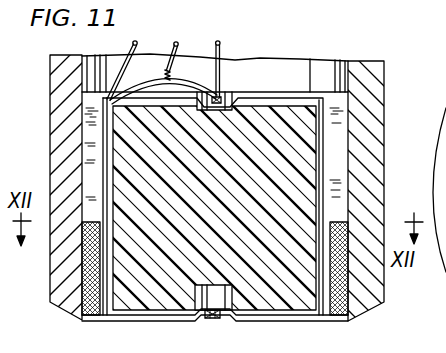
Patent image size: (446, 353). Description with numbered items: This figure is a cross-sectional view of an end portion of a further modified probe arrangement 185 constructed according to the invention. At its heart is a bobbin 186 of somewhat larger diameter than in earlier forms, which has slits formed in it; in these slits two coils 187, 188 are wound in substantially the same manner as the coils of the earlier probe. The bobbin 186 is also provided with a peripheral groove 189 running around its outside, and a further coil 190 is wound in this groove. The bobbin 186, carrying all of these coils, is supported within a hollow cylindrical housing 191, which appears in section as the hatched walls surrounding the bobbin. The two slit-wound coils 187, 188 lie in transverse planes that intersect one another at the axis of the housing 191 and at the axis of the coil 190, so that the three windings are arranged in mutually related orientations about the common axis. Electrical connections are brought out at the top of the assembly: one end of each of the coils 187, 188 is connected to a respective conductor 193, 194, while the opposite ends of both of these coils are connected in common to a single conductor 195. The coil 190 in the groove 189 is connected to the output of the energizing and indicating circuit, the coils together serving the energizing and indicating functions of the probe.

The modified probe arrangement 185 is at (47, 171).
The bobbin 186 is at (305, 150).
The coil 187 is at (164, 312).
The coil 188 is at (222, 316).
The peripheral groove 189 is at (90, 316).
The coil 190 is at (348, 248).
The hollow cylindrical housing 191 is at (366, 162).
The conductor 193 is at (147, 29).
The conductor 194 is at (221, 43).
The conductor 195 is at (178, 43).